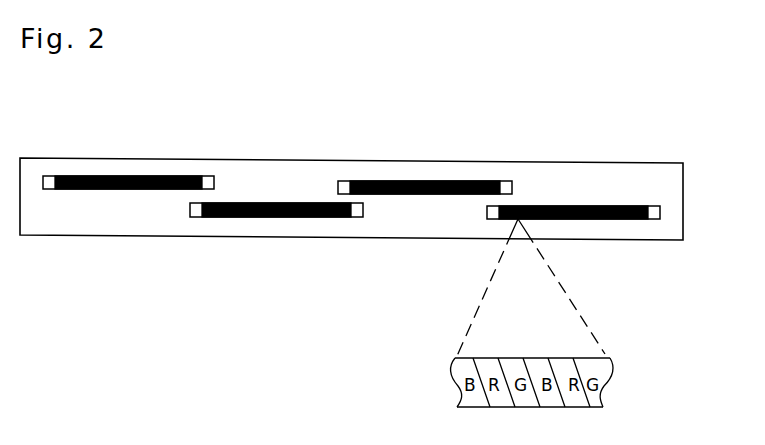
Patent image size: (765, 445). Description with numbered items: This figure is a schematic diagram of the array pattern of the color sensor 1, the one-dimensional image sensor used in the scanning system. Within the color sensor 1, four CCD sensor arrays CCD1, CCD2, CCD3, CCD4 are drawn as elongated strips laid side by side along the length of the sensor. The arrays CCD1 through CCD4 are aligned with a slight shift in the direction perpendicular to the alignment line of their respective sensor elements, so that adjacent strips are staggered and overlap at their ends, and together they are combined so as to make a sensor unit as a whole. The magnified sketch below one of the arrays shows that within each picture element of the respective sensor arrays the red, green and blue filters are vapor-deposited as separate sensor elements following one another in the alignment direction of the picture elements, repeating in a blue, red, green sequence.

The color sensor 1 is at (627, 164).
The CCD sensor array CCD1 is at (143, 176).
The CCD sensor array CCD2 is at (320, 217).
The CCD sensor array CCD3 is at (458, 181).
The CCD sensor array CCD4 is at (633, 219).